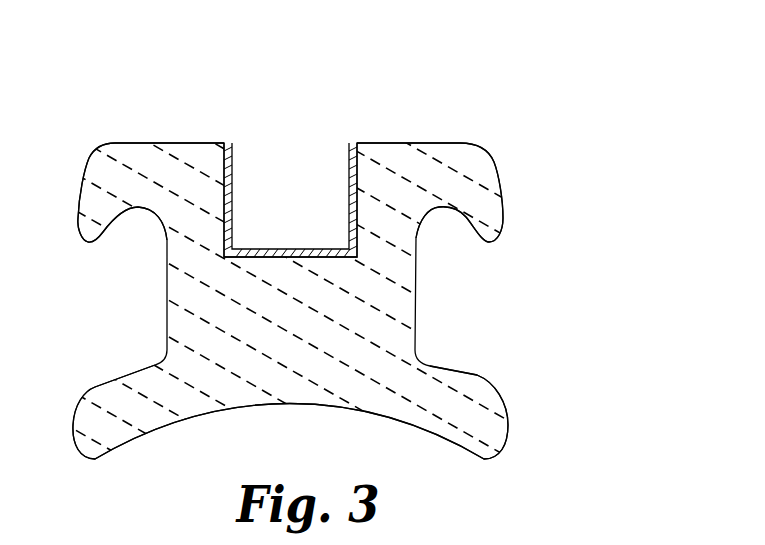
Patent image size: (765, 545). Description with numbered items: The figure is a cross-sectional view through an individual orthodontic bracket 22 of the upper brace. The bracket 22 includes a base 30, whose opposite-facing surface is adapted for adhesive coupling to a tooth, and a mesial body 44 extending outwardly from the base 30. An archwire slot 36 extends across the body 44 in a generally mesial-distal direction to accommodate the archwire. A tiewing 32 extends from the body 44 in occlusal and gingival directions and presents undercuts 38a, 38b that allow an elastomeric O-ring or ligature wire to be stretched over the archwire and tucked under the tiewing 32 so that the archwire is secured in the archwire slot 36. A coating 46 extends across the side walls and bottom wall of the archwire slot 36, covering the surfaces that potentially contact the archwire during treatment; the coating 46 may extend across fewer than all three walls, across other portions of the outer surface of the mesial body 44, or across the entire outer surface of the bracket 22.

The bracket 22 is at (482, 73).
The base 30 is at (482, 390).
The mesial tiewing 32 is at (402, 130).
The archwire slot 36 is at (296, 143).
The undercut 38a is at (127, 252).
The undercut 38b is at (453, 252).
The mesial body 44 is at (292, 320).
The coating 46 is at (260, 248).